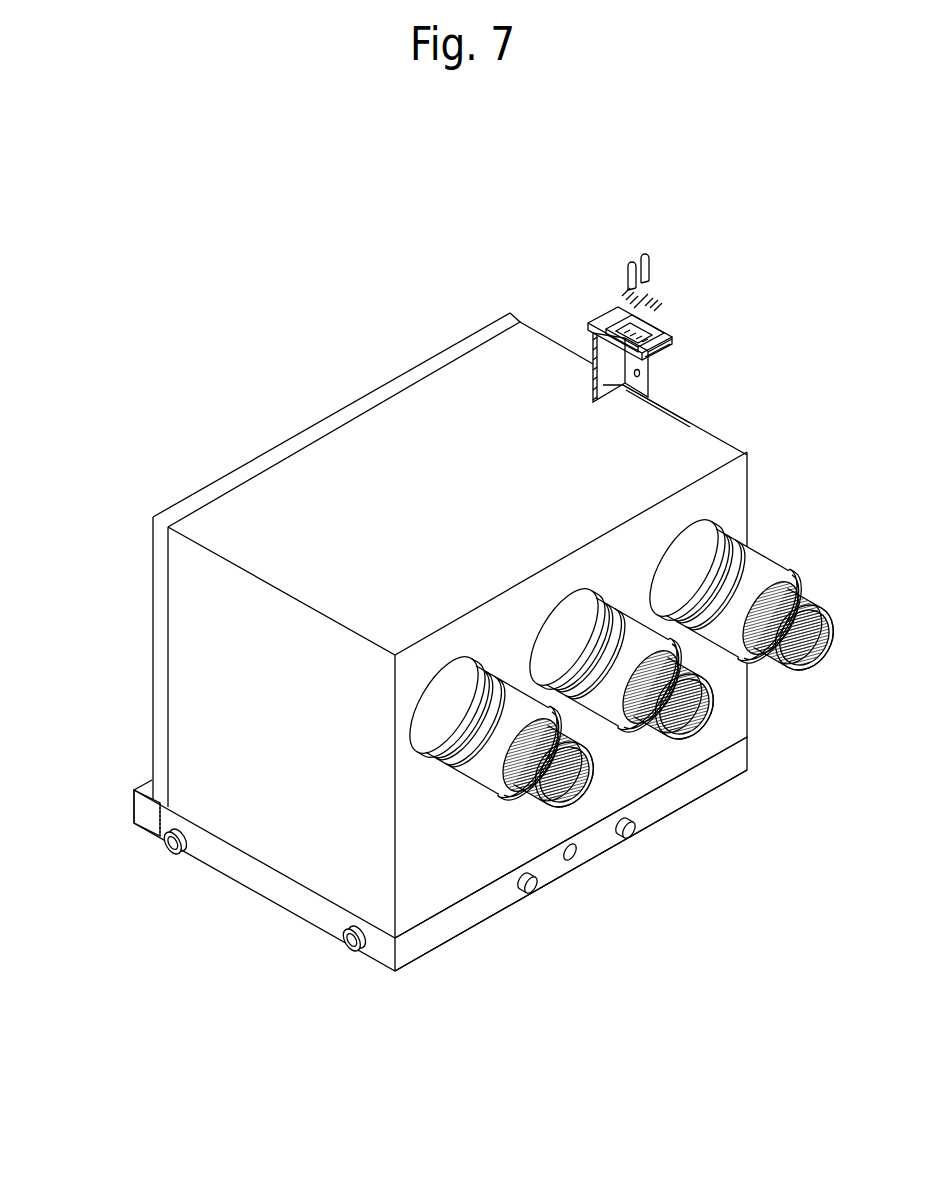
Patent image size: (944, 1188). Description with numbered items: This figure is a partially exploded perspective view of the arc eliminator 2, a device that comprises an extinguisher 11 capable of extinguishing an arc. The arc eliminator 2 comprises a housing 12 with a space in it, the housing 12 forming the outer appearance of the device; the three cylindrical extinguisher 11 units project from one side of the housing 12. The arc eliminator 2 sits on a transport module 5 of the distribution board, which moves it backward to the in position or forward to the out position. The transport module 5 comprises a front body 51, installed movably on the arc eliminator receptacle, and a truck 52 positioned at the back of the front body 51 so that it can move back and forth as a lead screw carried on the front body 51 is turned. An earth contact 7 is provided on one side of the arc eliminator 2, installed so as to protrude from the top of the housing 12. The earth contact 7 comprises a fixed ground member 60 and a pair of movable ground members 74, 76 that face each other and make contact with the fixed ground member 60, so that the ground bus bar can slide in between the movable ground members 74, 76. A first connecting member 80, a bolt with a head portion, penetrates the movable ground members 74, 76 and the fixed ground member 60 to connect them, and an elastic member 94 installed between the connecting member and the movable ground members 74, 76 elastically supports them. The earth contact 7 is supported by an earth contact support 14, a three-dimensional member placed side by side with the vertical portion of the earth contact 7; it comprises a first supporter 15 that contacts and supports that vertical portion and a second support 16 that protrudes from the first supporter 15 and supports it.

The arc eliminator 2 is at (461, 632).
The transport module 5 is at (407, 849).
The front body 51 is at (132, 803).
The truck 52 is at (443, 927).
The earth contact 7 is at (646, 311).
The extinguisher 11 is at (798, 557).
The housing 12 is at (410, 424).
The earth contact support 14 is at (686, 385).
The first supporter 15 is at (749, 368).
The second support 16 is at (648, 373).
The fixed ground member 60 is at (598, 312).
The movable ground member 74 is at (642, 333).
The movable ground member 76 is at (673, 345).
The first connecting member 80 is at (650, 265).
The elastic member 94 is at (657, 290).